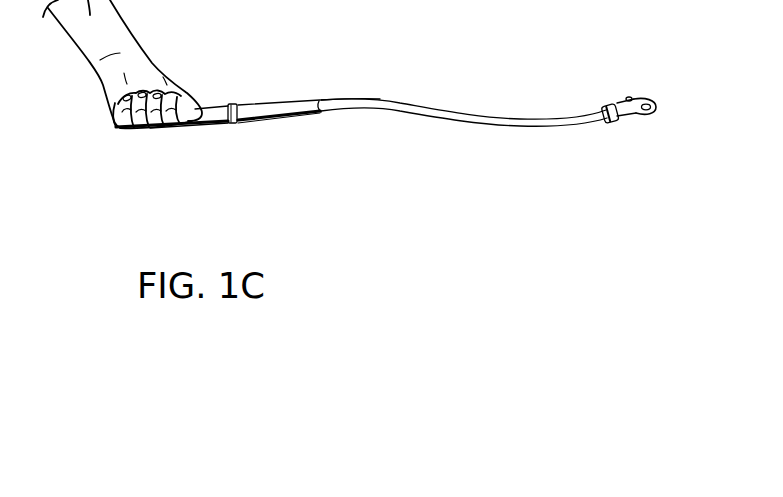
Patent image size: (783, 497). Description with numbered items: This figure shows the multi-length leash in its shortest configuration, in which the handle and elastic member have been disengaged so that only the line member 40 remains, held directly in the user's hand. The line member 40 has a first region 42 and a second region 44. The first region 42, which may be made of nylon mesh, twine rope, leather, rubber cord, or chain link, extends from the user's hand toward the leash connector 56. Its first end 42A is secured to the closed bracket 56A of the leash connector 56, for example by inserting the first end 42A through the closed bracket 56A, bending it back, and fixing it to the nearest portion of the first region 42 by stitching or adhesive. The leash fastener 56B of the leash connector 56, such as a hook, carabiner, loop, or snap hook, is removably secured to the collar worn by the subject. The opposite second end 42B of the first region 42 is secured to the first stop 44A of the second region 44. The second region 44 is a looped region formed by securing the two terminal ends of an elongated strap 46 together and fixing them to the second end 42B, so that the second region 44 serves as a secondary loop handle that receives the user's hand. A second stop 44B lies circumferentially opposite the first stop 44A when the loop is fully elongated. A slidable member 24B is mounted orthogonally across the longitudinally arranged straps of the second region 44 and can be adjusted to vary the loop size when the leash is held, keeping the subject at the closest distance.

The line member 40 is at (640, 53).
The first region 42 is at (435, 102).
The first end 42A is at (603, 120).
The second end 42B is at (328, 100).
The second region 44 is at (240, 102).
The first stop 44A is at (287, 108).
The second stop 44B is at (113, 117).
The elongated strap 46 is at (222, 125).
The slidable member 24B is at (232, 104).
The leash connector 56 is at (660, 90).
The closed bracket 56A is at (613, 123).
The leash fastener 56B is at (656, 107).